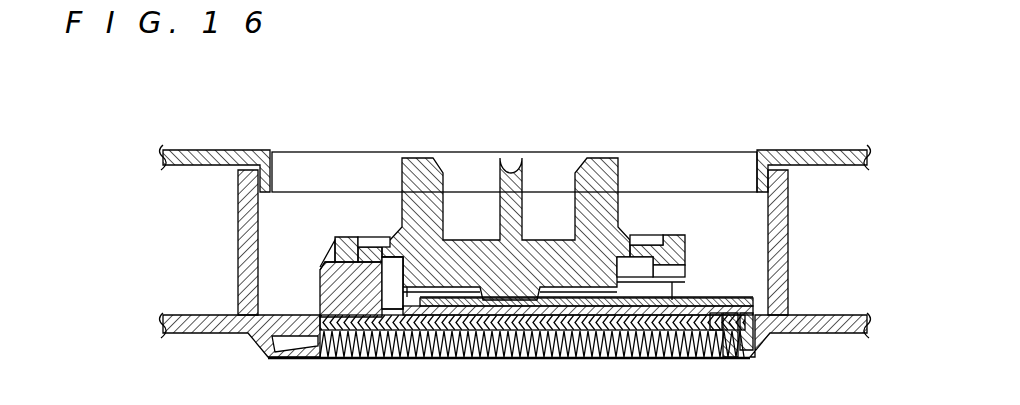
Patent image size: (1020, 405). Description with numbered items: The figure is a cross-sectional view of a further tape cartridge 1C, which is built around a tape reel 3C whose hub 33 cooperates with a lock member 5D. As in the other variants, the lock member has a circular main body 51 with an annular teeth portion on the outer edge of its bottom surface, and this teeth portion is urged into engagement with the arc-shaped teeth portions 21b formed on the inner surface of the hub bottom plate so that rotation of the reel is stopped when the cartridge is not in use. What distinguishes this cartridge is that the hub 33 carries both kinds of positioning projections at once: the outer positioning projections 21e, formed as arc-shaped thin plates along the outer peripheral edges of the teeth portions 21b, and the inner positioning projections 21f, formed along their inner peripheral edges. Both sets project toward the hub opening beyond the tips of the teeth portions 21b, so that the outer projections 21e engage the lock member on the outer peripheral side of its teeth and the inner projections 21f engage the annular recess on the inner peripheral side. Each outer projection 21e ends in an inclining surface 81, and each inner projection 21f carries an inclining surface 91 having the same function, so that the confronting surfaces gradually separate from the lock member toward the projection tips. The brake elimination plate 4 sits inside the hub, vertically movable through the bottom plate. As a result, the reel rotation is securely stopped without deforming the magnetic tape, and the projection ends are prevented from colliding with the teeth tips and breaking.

The tape cartridge 1C is at (512, 122).
The lock member 5D is at (396, 177).
The tape reel 3C is at (214, 240).
The hub 33 is at (791, 247).
The inclining surface 81 is at (342, 250).
The inclining surface 91 is at (342, 237).
The positioning projection 21f is at (376, 237).
The positioning projection 21e is at (338, 252).
The teeth portion 21b is at (340, 290).
The main body 51 is at (688, 252).
The brake elimination plate 4 is at (720, 298).